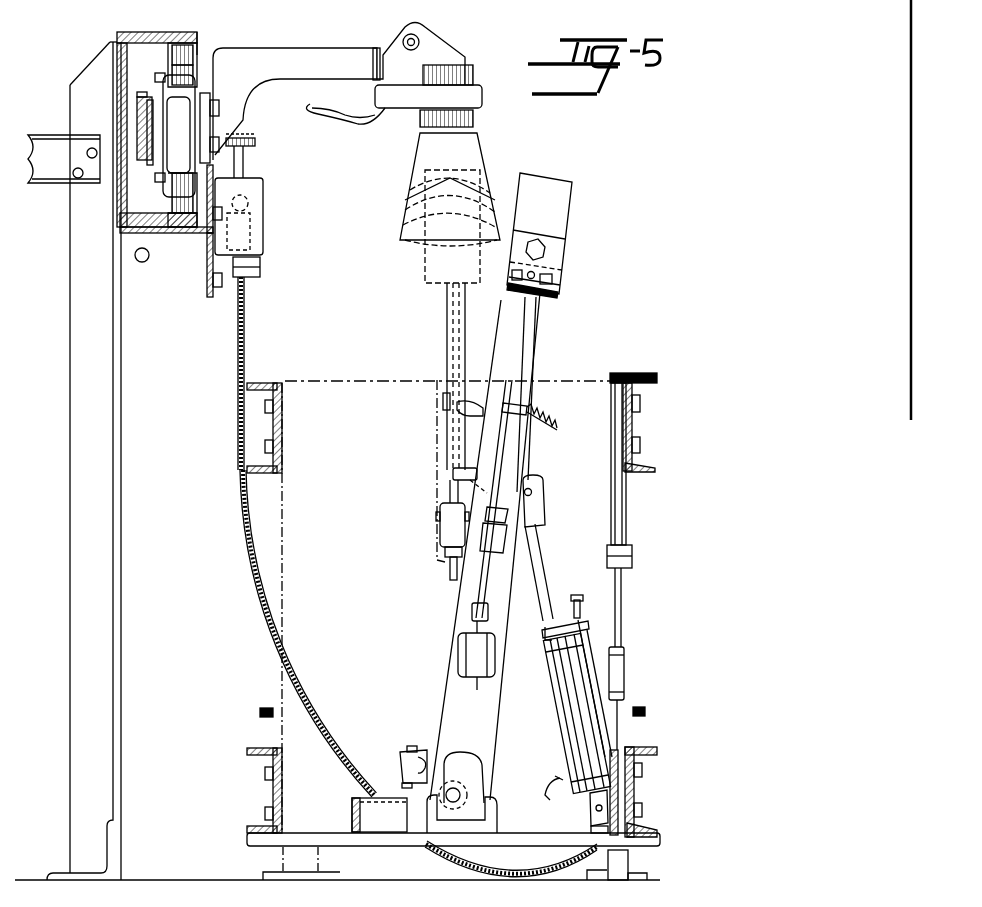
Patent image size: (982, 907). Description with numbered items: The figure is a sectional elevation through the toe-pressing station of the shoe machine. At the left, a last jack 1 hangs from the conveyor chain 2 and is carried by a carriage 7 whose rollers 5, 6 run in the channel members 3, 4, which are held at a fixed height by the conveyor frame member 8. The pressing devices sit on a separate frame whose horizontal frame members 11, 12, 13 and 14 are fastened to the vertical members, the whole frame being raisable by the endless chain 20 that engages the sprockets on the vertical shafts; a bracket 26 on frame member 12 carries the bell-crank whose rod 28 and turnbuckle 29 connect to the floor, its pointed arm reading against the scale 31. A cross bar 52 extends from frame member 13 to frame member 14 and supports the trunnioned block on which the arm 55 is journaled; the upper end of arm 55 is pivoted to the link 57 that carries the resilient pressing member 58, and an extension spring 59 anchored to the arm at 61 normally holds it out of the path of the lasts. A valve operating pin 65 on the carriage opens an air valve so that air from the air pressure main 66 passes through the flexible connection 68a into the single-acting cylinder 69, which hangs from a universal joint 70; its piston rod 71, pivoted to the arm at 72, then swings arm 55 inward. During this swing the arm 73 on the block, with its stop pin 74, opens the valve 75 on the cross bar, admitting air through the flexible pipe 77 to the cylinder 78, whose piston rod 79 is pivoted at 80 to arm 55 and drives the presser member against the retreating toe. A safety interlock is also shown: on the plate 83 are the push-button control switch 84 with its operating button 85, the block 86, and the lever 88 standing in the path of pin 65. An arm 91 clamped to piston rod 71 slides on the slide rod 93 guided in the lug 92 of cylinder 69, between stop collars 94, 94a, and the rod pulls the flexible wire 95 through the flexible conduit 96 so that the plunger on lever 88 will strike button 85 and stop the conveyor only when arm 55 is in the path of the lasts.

The last jack 1 is at (289, 58).
The conveyor chain 2 is at (140, 117).
The channel member 3 is at (190, 55).
The channel member 4 is at (173, 217).
The roller 5 is at (192, 62).
The roller 6 is at (167, 195).
The carriage 7 is at (197, 146).
The frame member 8 is at (100, 410).
The horizontal frame member 11 is at (283, 440).
The horizontal frame member 12 is at (635, 428).
The horizontal frame member 13 is at (273, 787).
The horizontal frame member 14 is at (635, 790).
The endless chain 20 is at (260, 713).
The bracket 26 is at (623, 513).
The rod 28 is at (622, 578).
The turnbuckle 29 is at (624, 690).
The scale 31 is at (633, 377).
The cross bar 52 is at (517, 820).
The arm 55 is at (537, 350).
The link 57 is at (563, 277).
The resilient pressing member 58 is at (560, 213).
The extension spring 59 is at (543, 417).
The spring anchorage 61 is at (517, 405).
The valve operating pin 65 is at (256, 138).
The air pressure main 66 is at (144, 260).
The flexible connection 68a is at (543, 785).
The single-acting cylinder 69 is at (558, 690).
The universal joint 70 is at (590, 820).
The piston rod 71 is at (548, 560).
The pivot 72 is at (537, 493).
The arm 73 is at (420, 757).
The stop pin 74 is at (407, 793).
The valve 75 is at (383, 823).
The flexible pipe 77 is at (425, 808).
The cylinder 78 is at (470, 653).
The piston rod 79 is at (463, 590).
The pivot 80 is at (505, 520).
The plate 83 is at (262, 266).
The push-button control switch 84 is at (263, 210).
The operating button 85 is at (250, 215).
The block 86 is at (250, 240).
The lever 88 is at (250, 162).
The arm 91 is at (550, 627).
The lug 92 is at (600, 650).
The slide rod 93 is at (598, 682).
The stop collar 94 is at (581, 598).
The stop collar 94a is at (585, 617).
The flexible wire 95 is at (244, 320).
The flexible conduit 96 is at (300, 697).